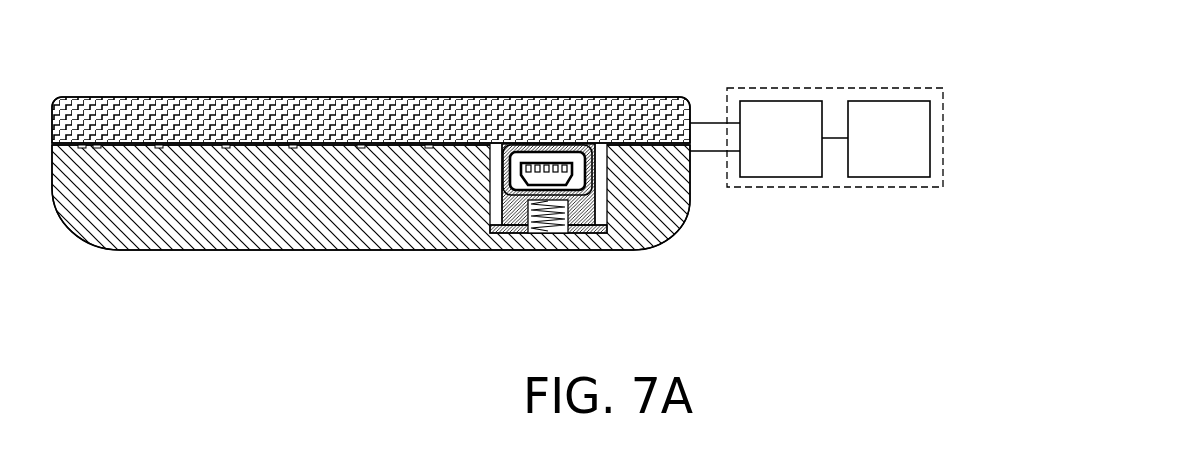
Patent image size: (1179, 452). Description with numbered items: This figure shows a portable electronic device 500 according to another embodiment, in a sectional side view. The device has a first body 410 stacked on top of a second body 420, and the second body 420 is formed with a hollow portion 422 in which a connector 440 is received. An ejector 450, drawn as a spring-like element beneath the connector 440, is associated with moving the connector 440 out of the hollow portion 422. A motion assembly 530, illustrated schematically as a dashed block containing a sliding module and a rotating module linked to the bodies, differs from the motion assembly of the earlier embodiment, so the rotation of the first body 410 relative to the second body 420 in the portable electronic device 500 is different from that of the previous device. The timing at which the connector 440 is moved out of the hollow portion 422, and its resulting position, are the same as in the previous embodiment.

The first body 410 is at (305, 110).
The second body 420 is at (318, 232).
The hollow portion 422 is at (492, 183).
The connector 440 is at (592, 172).
The ejector 450 is at (540, 233).
The portable electronic device 500 is at (1158, 297).
The motion assembly 530 is at (943, 137).